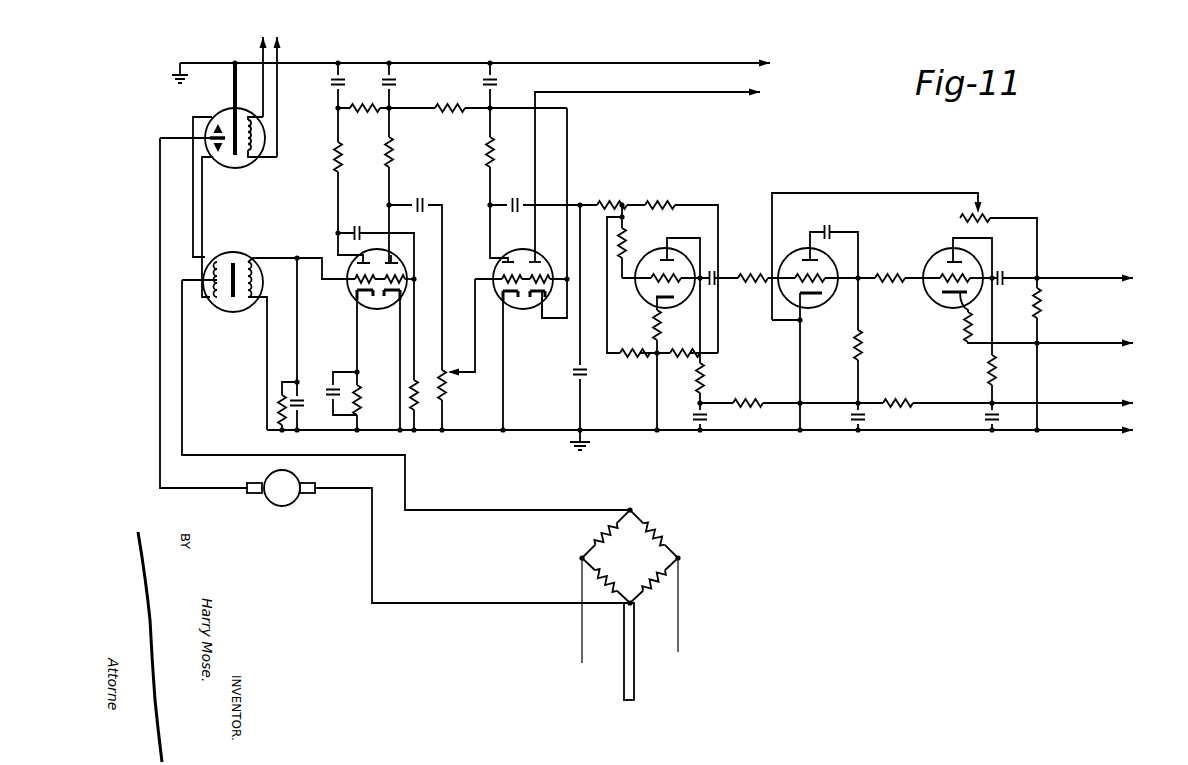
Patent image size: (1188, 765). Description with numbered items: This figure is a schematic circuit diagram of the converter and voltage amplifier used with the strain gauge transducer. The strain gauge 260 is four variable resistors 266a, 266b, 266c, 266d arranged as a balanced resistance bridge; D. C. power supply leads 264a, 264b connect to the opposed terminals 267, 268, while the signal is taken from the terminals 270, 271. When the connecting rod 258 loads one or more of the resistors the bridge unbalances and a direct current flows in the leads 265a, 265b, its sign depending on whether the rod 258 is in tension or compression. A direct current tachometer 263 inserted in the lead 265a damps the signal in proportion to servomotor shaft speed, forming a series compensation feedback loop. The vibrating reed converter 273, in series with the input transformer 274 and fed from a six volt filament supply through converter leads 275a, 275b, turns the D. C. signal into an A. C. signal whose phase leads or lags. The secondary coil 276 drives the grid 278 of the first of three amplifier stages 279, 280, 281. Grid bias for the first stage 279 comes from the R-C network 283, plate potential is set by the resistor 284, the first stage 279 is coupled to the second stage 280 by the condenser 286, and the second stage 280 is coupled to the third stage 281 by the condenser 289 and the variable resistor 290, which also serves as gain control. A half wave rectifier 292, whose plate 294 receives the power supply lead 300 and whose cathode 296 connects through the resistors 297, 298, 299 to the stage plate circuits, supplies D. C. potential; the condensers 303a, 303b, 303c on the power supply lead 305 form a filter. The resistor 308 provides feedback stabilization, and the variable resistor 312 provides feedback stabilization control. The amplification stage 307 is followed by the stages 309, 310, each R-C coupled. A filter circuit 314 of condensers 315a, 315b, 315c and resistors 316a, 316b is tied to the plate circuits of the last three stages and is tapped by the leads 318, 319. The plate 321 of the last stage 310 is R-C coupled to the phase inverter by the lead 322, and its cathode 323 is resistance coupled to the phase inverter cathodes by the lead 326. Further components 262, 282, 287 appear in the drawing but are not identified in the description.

The connecting rod 258 is at (623, 661).
The strain gauge 260 is at (639, 565).
The capacitor 262 is at (351, 326).
The direct current tachometer 263 is at (290, 501).
The D. C. power supply lead 264a is at (580, 645).
The D. C. power supply lead 264b is at (682, 646).
The lead 265a is at (153, 432).
The lead 265b is at (473, 512).
The variable resistor 266a is at (599, 538).
The variable resistor 266b is at (591, 582).
The variable resistor 266c is at (670, 588).
The variable resistor 266d is at (655, 518).
The terminal 267 is at (579, 559).
The terminal 268 is at (683, 556).
The terminal 270 is at (628, 606).
The terminal 271 is at (628, 509).
The vibrating reed converter 273 is at (228, 163).
The input transformer 274 is at (238, 308).
The converter lead 275a is at (260, 47).
The converter lead 275b is at (289, 56).
The secondary coil 276 is at (265, 257).
The grid 278 is at (348, 292).
The first amplifier stage 279 is at (352, 307).
The second amplifier stage 280 is at (376, 306).
The third amplifier stage 281 is at (490, 267).
The cathode 282 is at (352, 360).
The R-C network 283 is at (350, 384).
The resistor 284 is at (362, 112).
The condenser 286 is at (378, 210).
The resistor 287 is at (417, 424).
The condenser 289 is at (421, 199).
The variable resistor 290 is at (446, 387).
The half wave rectifier 292 is at (521, 303).
The plate 294 is at (534, 260).
The cathode 296 is at (536, 301).
The resistor 297 is at (445, 112).
The resistor 298 is at (337, 166).
The resistor 299 is at (397, 152).
The lead 300 is at (672, 92).
The condenser 303a is at (334, 83).
The condenser 303b is at (393, 83).
The condenser 303c is at (502, 83).
The power supply lead 305 is at (639, 60).
The amplification stage 307 is at (642, 254).
The resistor 308 is at (661, 202).
The amplification stage 309 is at (819, 313).
The last amplification stage 310 is at (959, 297).
The variable resistor 312 is at (990, 215).
The filter circuit 314 is at (902, 433).
The condenser 315a is at (712, 418).
The condenser 315b is at (851, 421).
The condenser 315c is at (984, 422).
The resistor 316a is at (740, 400).
The resistor 316b is at (906, 400).
The lead 318 is at (1100, 440).
The lead 319 is at (1103, 383).
The plate 321 is at (942, 261).
The lead 322 is at (1102, 268).
The cathode 323 is at (927, 300).
The lead 326 is at (1103, 323).